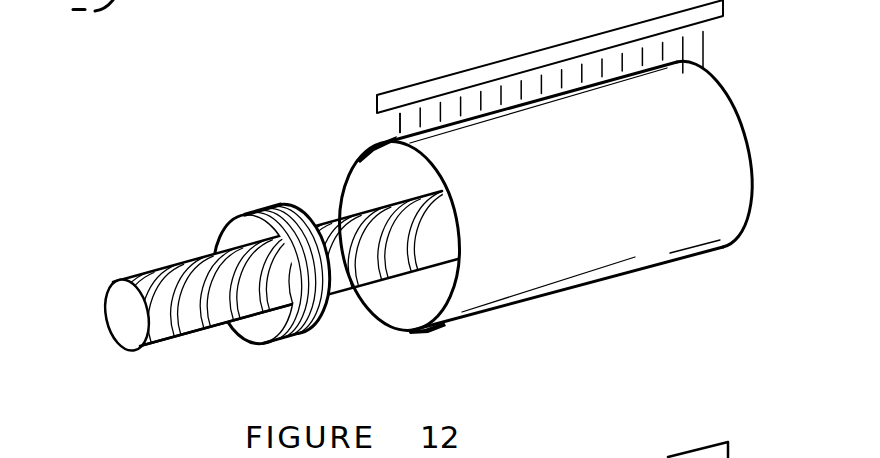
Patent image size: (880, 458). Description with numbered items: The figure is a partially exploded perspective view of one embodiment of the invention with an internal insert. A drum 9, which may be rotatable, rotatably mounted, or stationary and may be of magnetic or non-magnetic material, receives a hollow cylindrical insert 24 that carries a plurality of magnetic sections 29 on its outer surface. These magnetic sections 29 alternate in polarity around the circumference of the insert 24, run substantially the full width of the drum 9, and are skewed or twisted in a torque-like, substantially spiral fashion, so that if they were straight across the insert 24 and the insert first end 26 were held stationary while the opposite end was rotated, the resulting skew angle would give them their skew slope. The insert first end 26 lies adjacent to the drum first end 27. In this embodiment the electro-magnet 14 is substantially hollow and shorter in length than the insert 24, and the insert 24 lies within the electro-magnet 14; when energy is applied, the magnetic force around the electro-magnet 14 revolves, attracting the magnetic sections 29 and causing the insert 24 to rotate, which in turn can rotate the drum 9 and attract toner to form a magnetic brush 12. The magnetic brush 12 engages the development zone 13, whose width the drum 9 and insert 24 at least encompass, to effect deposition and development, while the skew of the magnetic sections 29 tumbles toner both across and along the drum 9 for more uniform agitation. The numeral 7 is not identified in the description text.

The magnetic strip / bar 7 is at (532, 50).
The drum 9 is at (577, 209).
The magnetic brush 12 is at (715, 25).
The development zone 13 is at (398, 120).
The electro-magnet 14 is at (254, 295).
The insert 24 is at (158, 350).
The insert first end 26 is at (110, 281).
The drum first end 27 is at (418, 331).
The magnetic section 29 is at (188, 274).